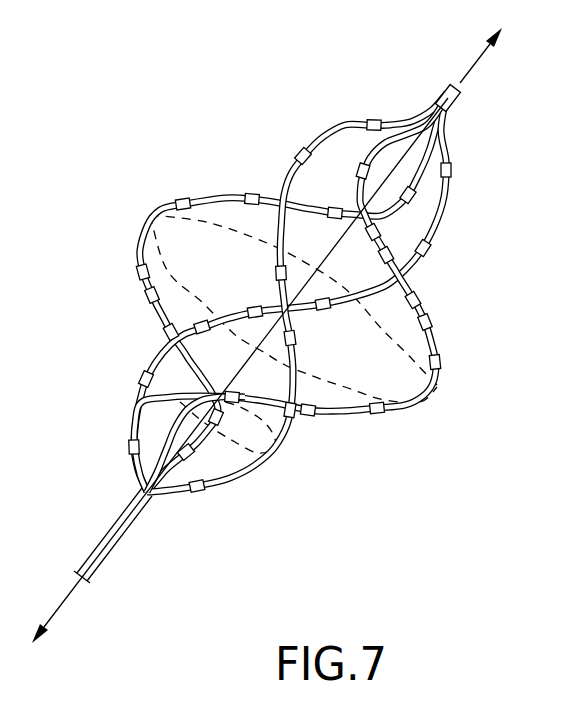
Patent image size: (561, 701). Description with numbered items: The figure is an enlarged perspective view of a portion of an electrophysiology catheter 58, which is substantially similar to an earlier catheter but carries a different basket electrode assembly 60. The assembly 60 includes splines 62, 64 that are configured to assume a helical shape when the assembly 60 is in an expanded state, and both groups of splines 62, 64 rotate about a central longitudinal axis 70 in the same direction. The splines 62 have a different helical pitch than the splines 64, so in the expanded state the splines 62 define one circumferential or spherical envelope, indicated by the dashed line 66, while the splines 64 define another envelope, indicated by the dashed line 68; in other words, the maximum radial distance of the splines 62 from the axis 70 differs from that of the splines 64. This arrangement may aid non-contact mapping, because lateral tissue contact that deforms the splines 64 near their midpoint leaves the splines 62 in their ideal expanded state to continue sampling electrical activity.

The electrophysiology catheter 58 is at (96, 188).
The basket electrode assembly 60 is at (199, 174).
The splines 62 is at (232, 485).
The splines 64 is at (440, 352).
The dashed line 66 is at (133, 402).
The dashed line 68 is at (395, 332).
The central longitudinal axis 70 is at (470, 73).